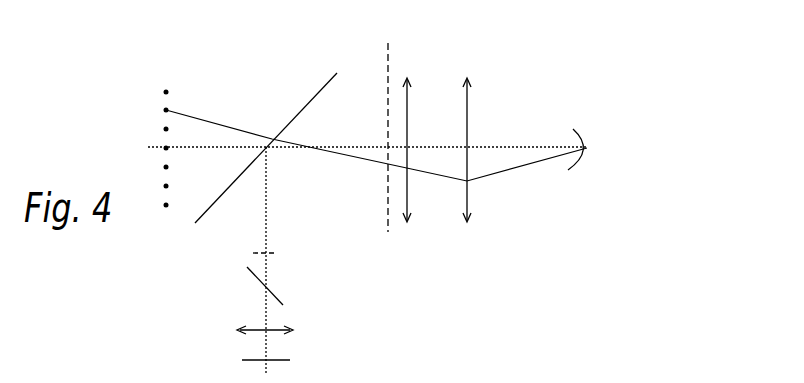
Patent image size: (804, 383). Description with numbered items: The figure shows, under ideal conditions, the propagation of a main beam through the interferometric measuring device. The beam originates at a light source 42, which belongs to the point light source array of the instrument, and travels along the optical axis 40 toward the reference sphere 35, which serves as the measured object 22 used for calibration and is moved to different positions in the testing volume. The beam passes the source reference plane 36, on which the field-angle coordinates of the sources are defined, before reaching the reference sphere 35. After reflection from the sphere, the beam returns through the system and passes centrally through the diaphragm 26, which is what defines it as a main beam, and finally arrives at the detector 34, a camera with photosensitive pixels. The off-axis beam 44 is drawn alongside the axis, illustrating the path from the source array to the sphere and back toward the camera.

The light source 42 is at (163, 110).
The off-axis light beam 44 is at (219, 116).
The optical axis 40 is at (344, 147).
The source reference plane 36 is at (384, 239).
The reference sphere 35 is at (578, 133).
The measured object 22 is at (583, 183).
The diaphragm 26 is at (282, 243).
The detector 34 is at (227, 357).